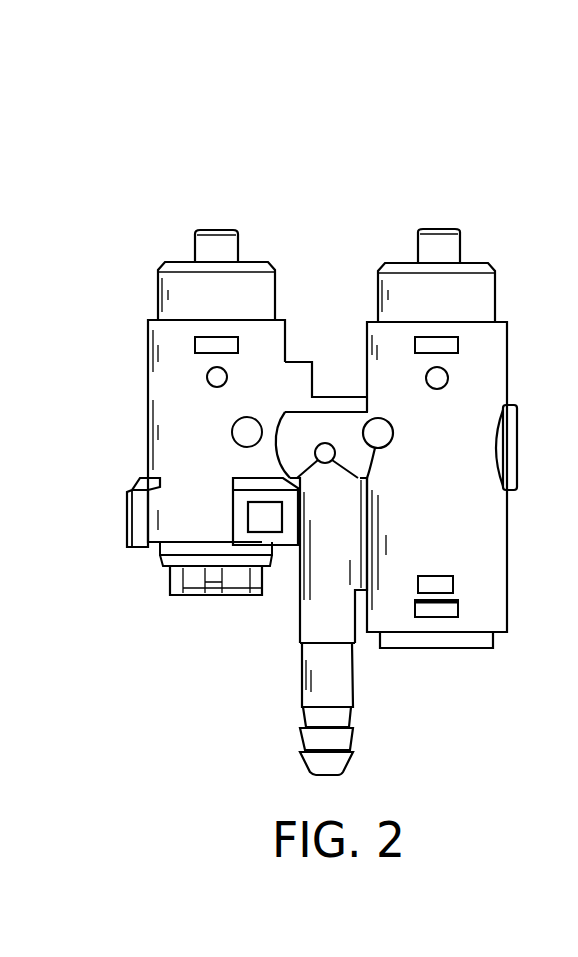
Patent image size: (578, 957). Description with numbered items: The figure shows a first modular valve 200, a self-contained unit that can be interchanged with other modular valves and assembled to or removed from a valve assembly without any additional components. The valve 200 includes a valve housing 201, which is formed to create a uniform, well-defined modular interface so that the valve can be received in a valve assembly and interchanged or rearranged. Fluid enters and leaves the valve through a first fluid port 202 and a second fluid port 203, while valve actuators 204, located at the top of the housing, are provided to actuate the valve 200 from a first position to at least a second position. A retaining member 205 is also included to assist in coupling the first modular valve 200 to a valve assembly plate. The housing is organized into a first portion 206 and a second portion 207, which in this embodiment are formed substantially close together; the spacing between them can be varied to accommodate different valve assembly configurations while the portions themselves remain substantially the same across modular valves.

The first modular valve 200 is at (183, 150).
The valve housing 201 is at (155, 389).
The first fluid port 202 is at (177, 588).
The second fluid port 203 is at (340, 677).
The valve actuators 204 is at (220, 230).
The retaining member 205 is at (130, 500).
The first portion 206 is at (275, 712).
The second portion 207 is at (508, 712).